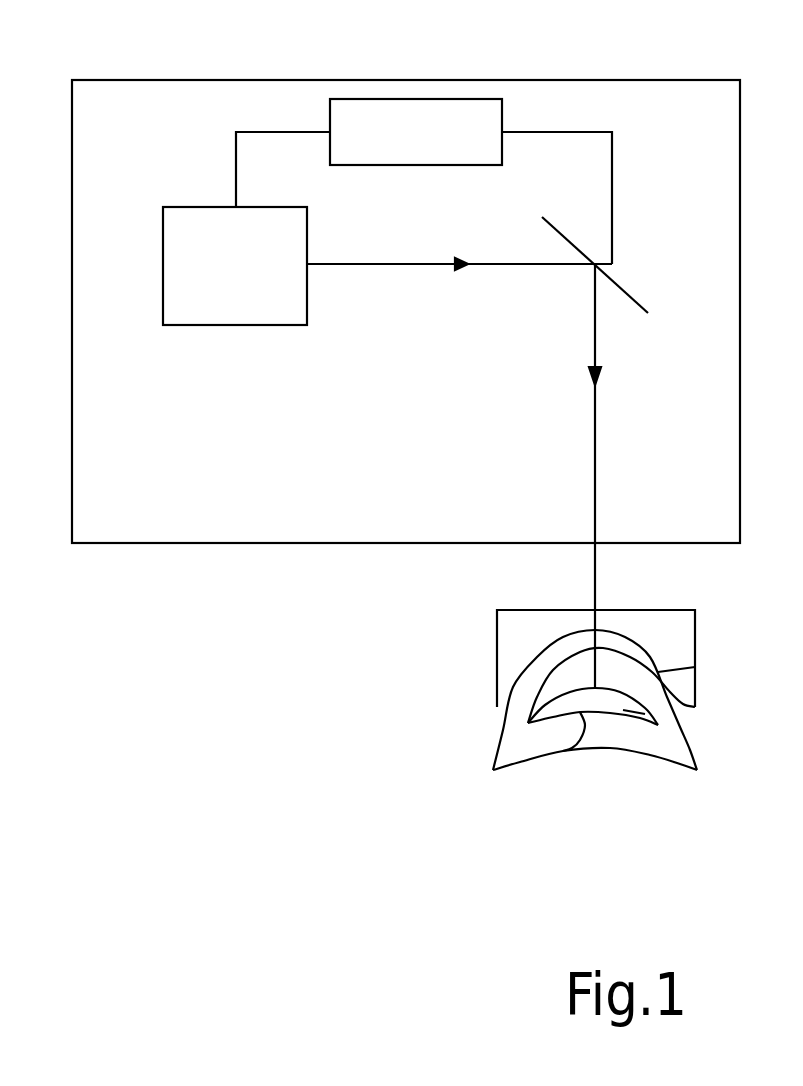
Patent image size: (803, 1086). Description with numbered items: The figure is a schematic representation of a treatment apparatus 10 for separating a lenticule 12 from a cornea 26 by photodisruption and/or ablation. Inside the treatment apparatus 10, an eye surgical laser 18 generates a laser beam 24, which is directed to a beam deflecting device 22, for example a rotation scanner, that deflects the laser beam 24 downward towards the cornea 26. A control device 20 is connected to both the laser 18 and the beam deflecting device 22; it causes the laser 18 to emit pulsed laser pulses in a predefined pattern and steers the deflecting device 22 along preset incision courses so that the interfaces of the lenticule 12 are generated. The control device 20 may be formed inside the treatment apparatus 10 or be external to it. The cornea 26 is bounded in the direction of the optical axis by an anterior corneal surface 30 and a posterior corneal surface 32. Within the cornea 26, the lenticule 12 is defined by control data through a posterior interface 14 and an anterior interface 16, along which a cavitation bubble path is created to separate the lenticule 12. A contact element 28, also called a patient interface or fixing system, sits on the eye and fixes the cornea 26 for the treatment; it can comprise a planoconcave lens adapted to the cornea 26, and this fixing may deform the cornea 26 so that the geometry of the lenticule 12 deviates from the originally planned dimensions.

The treatment apparatus 10 is at (594, 80).
The lenticule 12 is at (600, 738).
The posterior interface 14 is at (565, 752).
The anterior interface 16 is at (570, 694).
The eye surgical laser 18 is at (251, 281).
The control device 20 is at (383, 100).
The beam deflecting device 22 is at (612, 280).
The laser beam 24 is at (422, 263).
The cornea 26 is at (516, 740).
The contact element 28 is at (695, 612).
The anterior corneal surface 30 is at (695, 667).
The posterior corneal surface 32 is at (677, 766).